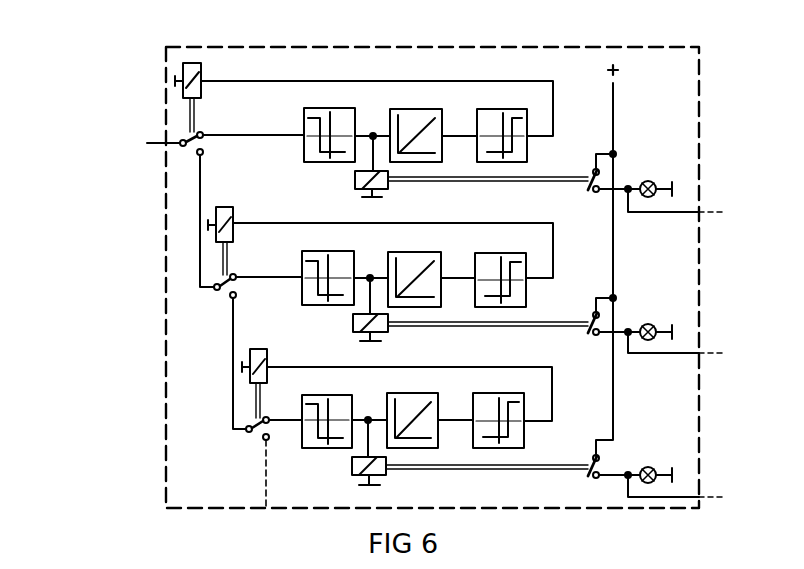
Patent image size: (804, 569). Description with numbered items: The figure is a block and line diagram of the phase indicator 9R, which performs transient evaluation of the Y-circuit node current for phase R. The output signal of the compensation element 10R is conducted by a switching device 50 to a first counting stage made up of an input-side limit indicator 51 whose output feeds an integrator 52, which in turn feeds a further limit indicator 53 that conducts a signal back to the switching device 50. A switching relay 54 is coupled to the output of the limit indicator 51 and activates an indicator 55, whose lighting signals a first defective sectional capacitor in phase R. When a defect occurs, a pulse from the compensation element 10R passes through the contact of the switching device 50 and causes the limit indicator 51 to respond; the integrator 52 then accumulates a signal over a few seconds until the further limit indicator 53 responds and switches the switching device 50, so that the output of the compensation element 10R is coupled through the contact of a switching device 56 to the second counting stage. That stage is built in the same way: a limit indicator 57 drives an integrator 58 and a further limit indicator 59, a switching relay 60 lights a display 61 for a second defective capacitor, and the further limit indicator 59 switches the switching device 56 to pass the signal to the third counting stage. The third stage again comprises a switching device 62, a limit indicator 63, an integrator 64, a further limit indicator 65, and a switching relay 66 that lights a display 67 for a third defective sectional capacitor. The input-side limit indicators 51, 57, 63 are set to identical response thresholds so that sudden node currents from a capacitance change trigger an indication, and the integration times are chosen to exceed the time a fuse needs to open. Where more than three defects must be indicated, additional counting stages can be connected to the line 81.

The switching device 50 is at (201, 74).
The limit indicator 51 is at (302, 168).
The integrator 52 is at (390, 118).
The further limit indicator 53 is at (508, 183).
The switching relay 54 is at (358, 192).
The indicator 55 is at (649, 181).
The switching device 56 is at (233, 210).
The limit indicator 57 is at (302, 262).
The integrator 58 is at (389, 262).
The further limit indicator 59 is at (476, 262).
The switching relay 60 is at (353, 323).
The display 61 is at (648, 324).
The switching device 62 is at (267, 352).
The limit indicator 63 is at (302, 405).
The integrator 64 is at (388, 405).
The further limit indicator 65 is at (474, 403).
The switching relay 66 is at (352, 467).
The display 67 is at (648, 467).
The line 81 is at (262, 452).
The phase indicator 9R is at (165, 273).
The compensation element 10R is at (147, 144).